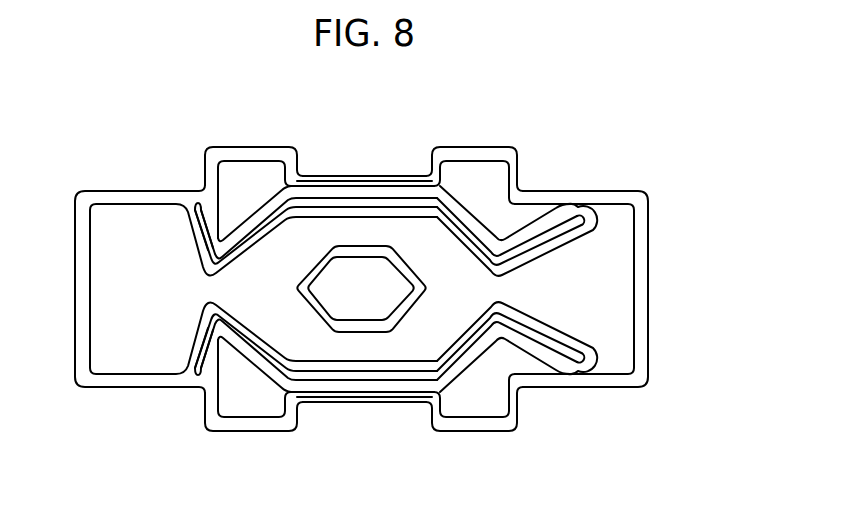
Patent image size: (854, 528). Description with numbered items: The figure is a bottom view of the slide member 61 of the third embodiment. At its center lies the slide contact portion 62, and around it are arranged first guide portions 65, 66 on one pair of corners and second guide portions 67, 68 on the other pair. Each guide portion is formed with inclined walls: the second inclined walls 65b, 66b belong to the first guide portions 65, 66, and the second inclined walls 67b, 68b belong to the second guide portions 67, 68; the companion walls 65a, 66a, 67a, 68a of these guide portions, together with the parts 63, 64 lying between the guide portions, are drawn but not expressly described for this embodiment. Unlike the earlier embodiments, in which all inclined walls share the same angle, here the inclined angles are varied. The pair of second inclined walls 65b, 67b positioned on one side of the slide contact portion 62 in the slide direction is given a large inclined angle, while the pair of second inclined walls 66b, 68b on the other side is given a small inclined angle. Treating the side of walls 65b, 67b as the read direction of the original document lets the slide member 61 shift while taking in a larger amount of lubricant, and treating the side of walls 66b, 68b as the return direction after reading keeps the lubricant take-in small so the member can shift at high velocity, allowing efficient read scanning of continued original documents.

The slide member 61 is at (622, 99).
The slide contact portion 62 is at (361, 333).
The upper connecting bar 63 is at (367, 186).
The lower connecting bar 64 is at (410, 403).
The first guide portion 65 is at (203, 137).
The first tab opening 65a is at (245, 203).
The second inclined wall 65b is at (193, 220).
The first guide portion 66 is at (503, 218).
The second tab opening 66a is at (454, 198).
The second inclined wall 66b is at (578, 215).
The second guide portion 67 is at (203, 441).
The third tab opening 67a is at (245, 375).
The second inclined wall 67b is at (193, 358).
The second guide portion 68 is at (503, 360).
The fourth tab opening 68a is at (454, 380).
The second inclined wall 68b is at (578, 363).